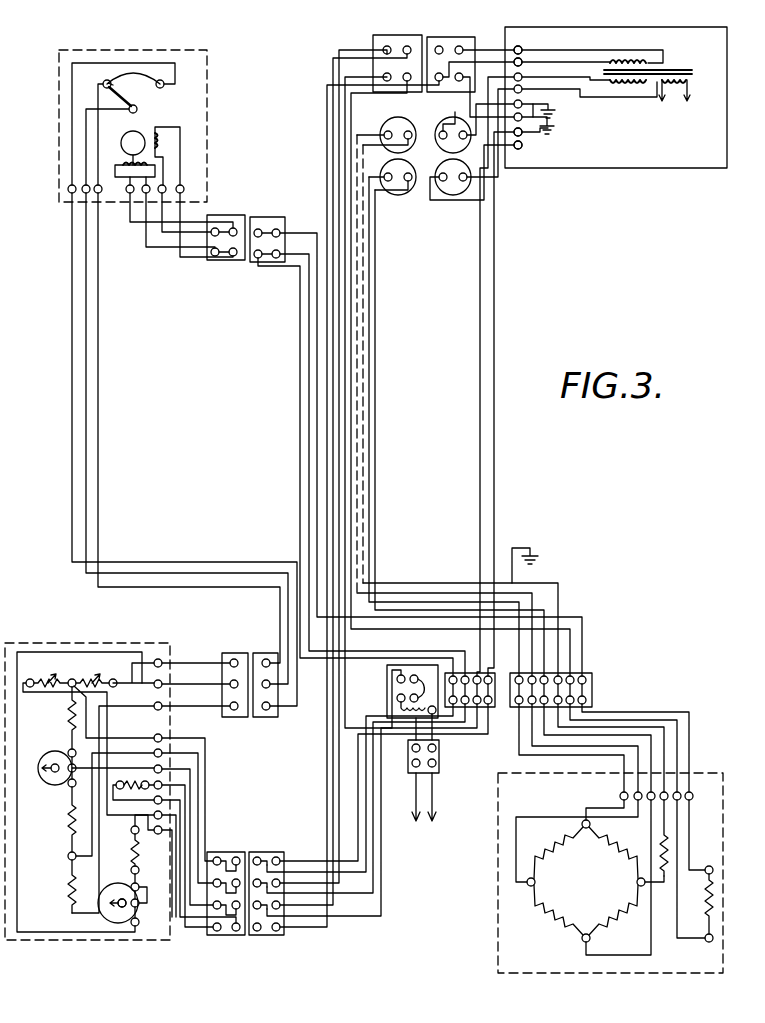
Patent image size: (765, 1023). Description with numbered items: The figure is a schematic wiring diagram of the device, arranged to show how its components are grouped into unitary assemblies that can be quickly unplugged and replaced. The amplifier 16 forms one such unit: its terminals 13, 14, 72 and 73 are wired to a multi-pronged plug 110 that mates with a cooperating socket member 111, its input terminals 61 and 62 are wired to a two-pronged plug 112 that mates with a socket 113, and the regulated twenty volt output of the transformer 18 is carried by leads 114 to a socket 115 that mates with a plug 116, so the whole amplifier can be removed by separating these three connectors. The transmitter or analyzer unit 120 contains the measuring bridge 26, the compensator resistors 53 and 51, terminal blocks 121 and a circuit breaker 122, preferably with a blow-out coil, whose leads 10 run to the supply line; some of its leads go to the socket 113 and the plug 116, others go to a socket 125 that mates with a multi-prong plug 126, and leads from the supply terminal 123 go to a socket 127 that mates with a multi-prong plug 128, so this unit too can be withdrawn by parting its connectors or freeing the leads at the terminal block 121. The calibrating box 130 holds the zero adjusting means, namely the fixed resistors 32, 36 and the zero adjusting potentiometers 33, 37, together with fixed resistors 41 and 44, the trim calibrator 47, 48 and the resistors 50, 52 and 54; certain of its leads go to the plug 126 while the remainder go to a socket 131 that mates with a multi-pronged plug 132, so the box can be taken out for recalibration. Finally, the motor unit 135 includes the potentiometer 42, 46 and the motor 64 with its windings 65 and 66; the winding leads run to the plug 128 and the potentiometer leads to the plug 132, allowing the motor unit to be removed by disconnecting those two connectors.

The leads 10 is at (434, 796).
The amplifier terminal 13 is at (518, 46).
The amplifier terminal 14 is at (521, 60).
The amplifier 16 is at (654, 170).
The transformer 18 is at (675, 61).
The measuring bridge 26 is at (556, 934).
The fixed resistor 32 is at (66, 712).
The zero adjusting potentiometer 33 is at (54, 756).
The fixed resistor 36 is at (66, 818).
The zero adjusting potentiometer 37 is at (44, 780).
The fixed resistor 41 is at (104, 680).
The potentiometer 42 is at (155, 88).
The fixed resistor 44 is at (66, 886).
The potentiometer 46 is at (120, 80).
The trim calibrator 47 is at (112, 918).
The trim calibrator 48 is at (120, 915).
The resistor 50 is at (142, 846).
The compensator resistor 51 is at (716, 902).
The resistor 52 is at (126, 790).
The compensator resistor 53 is at (668, 857).
The resistor 54 is at (58, 680).
The amplifier input terminal 61 is at (516, 150).
The amplifier input terminal 62 is at (520, 150).
The motor 64 is at (130, 131).
The motor winding 65 is at (160, 142).
The motor winding 66 is at (127, 182).
The amplifier terminal 72 is at (540, 104).
The amplifier terminal 73 is at (528, 136).
The multi-pronged plug 110 is at (439, 46).
The socket member 111 is at (376, 42).
The two-pronged plug 112 is at (446, 120).
The socket 113 is at (392, 120).
The leads 114 is at (478, 196).
The socket 115 is at (449, 196).
The plug 116 is at (402, 196).
The transmitter or analyzer unit 120 is at (524, 913).
The terminal block 121 is at (592, 692).
The circuit breaker 122 is at (429, 723).
The supply terminal 123 is at (463, 718).
The socket 125 is at (268, 936).
The multi-prong plug 126 is at (226, 936).
The socket 127 is at (267, 217).
The multi-prong plug 128 is at (225, 216).
The calibrating box 130 is at (59, 927).
The socket 131 is at (233, 654).
The multi-pronged plug 132 is at (264, 654).
The motor unit 135 is at (203, 123).